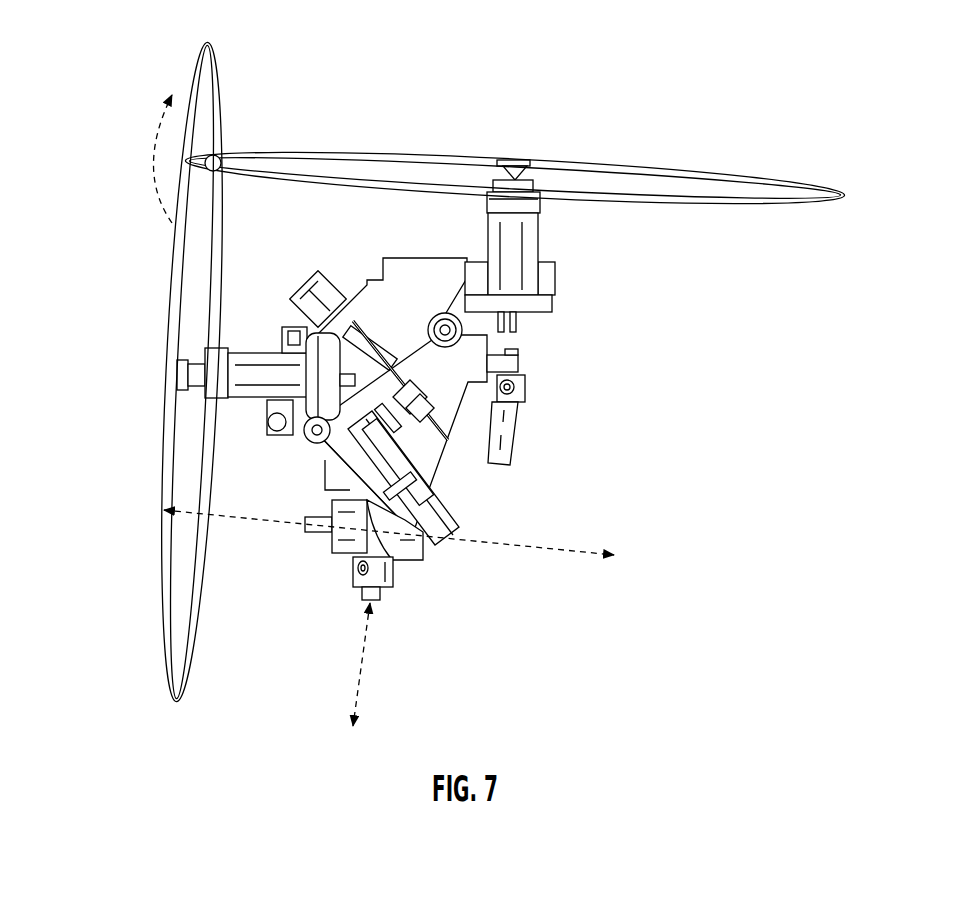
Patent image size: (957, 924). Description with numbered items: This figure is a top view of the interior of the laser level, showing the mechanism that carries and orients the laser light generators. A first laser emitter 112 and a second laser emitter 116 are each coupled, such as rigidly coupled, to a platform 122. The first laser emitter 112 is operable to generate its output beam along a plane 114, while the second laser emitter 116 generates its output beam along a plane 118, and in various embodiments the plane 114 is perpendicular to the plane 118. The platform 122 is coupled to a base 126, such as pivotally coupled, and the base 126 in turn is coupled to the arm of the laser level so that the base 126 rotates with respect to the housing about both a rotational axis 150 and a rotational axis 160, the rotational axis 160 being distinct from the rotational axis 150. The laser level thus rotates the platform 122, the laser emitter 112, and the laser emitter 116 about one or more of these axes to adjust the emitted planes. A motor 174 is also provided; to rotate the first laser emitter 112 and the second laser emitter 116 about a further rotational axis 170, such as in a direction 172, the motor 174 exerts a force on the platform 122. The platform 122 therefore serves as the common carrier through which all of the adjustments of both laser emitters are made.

The laser emitter 112 is at (531, 235).
The plane 114 is at (826, 226).
The laser emitter 116 is at (238, 376).
The plane 118 is at (147, 639).
The platform 122 is at (399, 275).
The base 126 is at (440, 460).
The rotational axis 150 is at (388, 673).
The rotational axis 160 is at (540, 570).
The rotational axis 170 is at (228, 149).
The direction 172 is at (137, 195).
The motor 174 is at (336, 462).